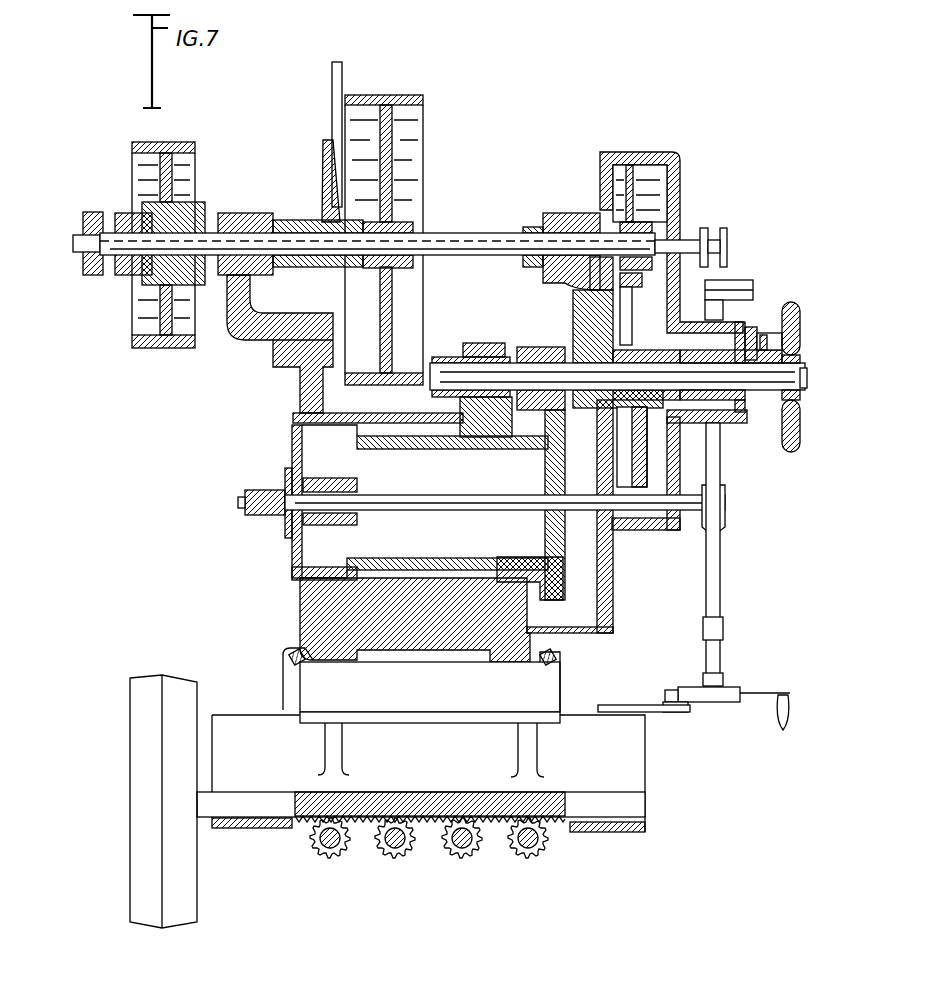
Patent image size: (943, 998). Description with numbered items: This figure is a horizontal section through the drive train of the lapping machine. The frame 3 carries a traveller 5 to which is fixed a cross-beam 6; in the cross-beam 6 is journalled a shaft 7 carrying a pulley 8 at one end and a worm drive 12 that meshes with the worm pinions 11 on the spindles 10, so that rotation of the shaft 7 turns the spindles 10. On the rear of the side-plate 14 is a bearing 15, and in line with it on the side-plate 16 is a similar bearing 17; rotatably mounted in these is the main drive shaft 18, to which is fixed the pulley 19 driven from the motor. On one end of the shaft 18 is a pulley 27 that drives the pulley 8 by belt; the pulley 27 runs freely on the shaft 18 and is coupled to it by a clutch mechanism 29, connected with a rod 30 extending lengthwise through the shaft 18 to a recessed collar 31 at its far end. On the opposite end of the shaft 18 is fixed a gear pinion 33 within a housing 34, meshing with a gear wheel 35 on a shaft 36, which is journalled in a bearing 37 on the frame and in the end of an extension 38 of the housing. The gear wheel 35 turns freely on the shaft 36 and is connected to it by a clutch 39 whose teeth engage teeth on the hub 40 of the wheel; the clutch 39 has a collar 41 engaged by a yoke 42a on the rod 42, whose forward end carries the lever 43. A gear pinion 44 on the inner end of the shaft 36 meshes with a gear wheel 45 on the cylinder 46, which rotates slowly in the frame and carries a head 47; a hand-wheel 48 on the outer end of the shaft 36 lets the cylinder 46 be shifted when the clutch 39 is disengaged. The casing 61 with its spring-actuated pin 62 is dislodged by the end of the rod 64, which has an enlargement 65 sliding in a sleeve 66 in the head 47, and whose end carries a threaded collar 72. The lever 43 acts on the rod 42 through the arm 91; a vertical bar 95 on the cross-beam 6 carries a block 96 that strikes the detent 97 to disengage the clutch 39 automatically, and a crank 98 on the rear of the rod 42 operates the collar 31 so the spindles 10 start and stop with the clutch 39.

The frame 3 is at (413, 640).
The traveller 5 is at (310, 698).
The cross-beam 6 is at (645, 756).
The shaft 7 is at (645, 809).
The pulley 8 is at (143, 725).
The spindles 10 is at (523, 856).
The worm pinion 11 is at (390, 857).
The worm drive 12 is at (441, 792).
The side-plate 14 is at (300, 388).
The bearing 15 is at (245, 213).
The side-plate 16 is at (573, 295).
The bearing 17 is at (580, 212).
The shaft 18 is at (475, 240).
The pulley 19 is at (395, 95).
The pulley 27 is at (185, 168).
The clutch mechanism 29 is at (133, 215).
The rod 30 is at (85, 243).
The recessed collar 31 is at (712, 248).
The gear pinion 33 is at (625, 150).
The housing 34 is at (643, 153).
The gear wheel 35 is at (633, 302).
The shaft 36 is at (593, 373).
The bearing 37 is at (465, 356).
The extension 38 is at (745, 330).
The clutch 39 is at (700, 410).
The hub 40 is at (650, 430).
The collar 41 is at (742, 348).
The rod 42 is at (720, 578).
The yoke 42a is at (795, 303).
The lever 43 is at (740, 690).
The gear pinion 44 is at (518, 355).
The gear wheel 45 is at (565, 568).
The cylinder 46 is at (427, 557).
The head 47 is at (302, 452).
The hand-wheel 48 is at (803, 430).
The casing 61 is at (267, 495).
The spring-actuated pin 62 is at (268, 513).
The rod 64 is at (418, 503).
The enlargement 65 is at (320, 510).
The sleeve 66 is at (347, 480).
The collar 72 is at (725, 515).
The arm 91 is at (723, 680).
The vertical bar 95 is at (668, 703).
The block 96 is at (668, 692).
The detent 97 is at (710, 703).
The crank 98 is at (740, 295).